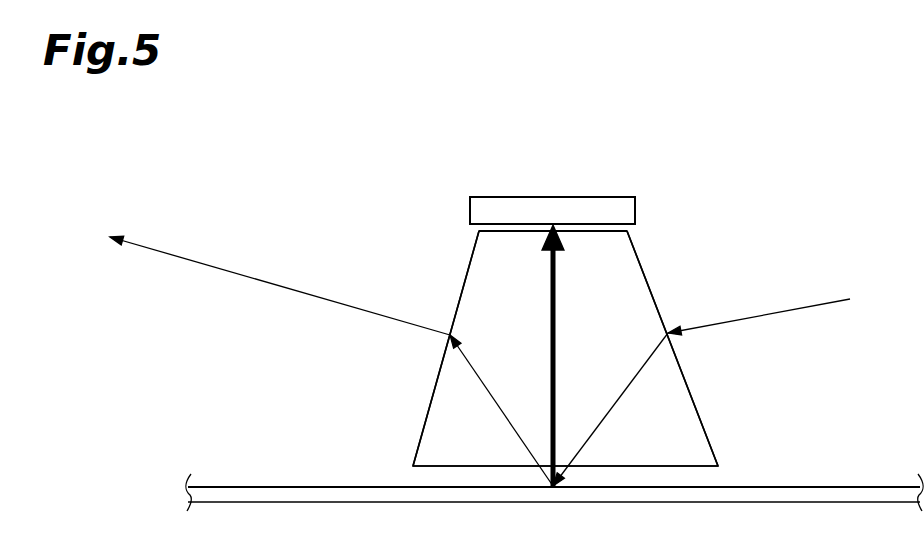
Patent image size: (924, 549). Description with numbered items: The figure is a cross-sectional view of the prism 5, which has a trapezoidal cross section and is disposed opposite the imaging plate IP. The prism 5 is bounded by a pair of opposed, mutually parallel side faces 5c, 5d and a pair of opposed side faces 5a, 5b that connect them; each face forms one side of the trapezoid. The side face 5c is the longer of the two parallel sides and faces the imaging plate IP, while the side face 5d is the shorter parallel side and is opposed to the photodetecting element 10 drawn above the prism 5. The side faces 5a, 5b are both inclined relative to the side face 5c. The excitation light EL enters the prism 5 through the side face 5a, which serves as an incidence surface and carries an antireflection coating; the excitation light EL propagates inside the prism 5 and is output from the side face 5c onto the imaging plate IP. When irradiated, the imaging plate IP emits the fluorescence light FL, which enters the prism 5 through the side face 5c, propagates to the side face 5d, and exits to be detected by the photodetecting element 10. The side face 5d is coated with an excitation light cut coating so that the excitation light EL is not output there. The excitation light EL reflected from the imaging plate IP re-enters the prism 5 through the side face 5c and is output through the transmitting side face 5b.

The photodetecting element 10 is at (553, 197).
The prism 5 is at (648, 283).
The side face (second face) 5a is at (694, 396).
The side face (third face) 5b is at (468, 273).
The side face 5c is at (460, 466).
The side face (fourth face) 5d is at (513, 232).
The fluorescence light FL is at (556, 305).
The excitation light EL is at (790, 308).
The imaging plate IP is at (855, 487).